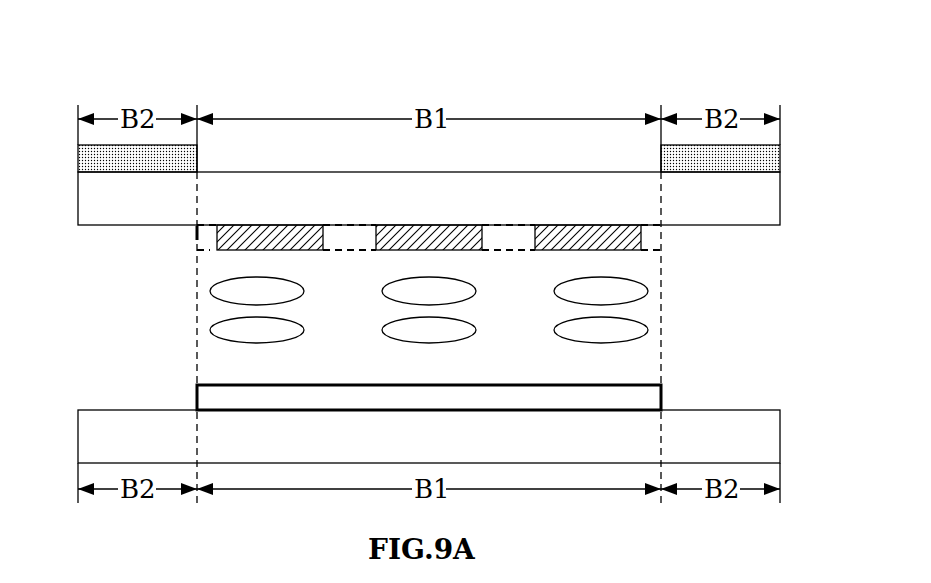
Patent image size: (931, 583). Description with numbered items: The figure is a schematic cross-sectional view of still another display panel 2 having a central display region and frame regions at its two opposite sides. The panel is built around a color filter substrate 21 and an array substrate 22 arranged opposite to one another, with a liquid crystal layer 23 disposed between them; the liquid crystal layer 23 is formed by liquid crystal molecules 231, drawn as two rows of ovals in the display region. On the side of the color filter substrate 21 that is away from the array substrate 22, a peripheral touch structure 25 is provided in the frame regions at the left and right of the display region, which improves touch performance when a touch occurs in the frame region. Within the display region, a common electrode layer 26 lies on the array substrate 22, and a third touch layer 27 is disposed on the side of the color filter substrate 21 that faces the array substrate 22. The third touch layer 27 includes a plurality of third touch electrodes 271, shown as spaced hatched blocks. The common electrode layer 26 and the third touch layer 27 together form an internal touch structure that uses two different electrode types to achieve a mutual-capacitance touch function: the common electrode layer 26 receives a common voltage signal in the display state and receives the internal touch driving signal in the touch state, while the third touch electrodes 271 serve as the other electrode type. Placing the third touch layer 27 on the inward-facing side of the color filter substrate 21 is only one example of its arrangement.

The display panel 2 is at (422, 80).
The color filter substrate 21 is at (112, 194).
The array substrate 22 is at (112, 432).
The liquid crystal layer 23 is at (431, 311).
The liquid crystal molecules 231 is at (232, 291).
The peripheral touch structure 25 is at (112, 157).
The common electrode layer 26 is at (236, 397).
The third touch layer 27 is at (207, 250).
The third touch electrodes 271 is at (645, 240).